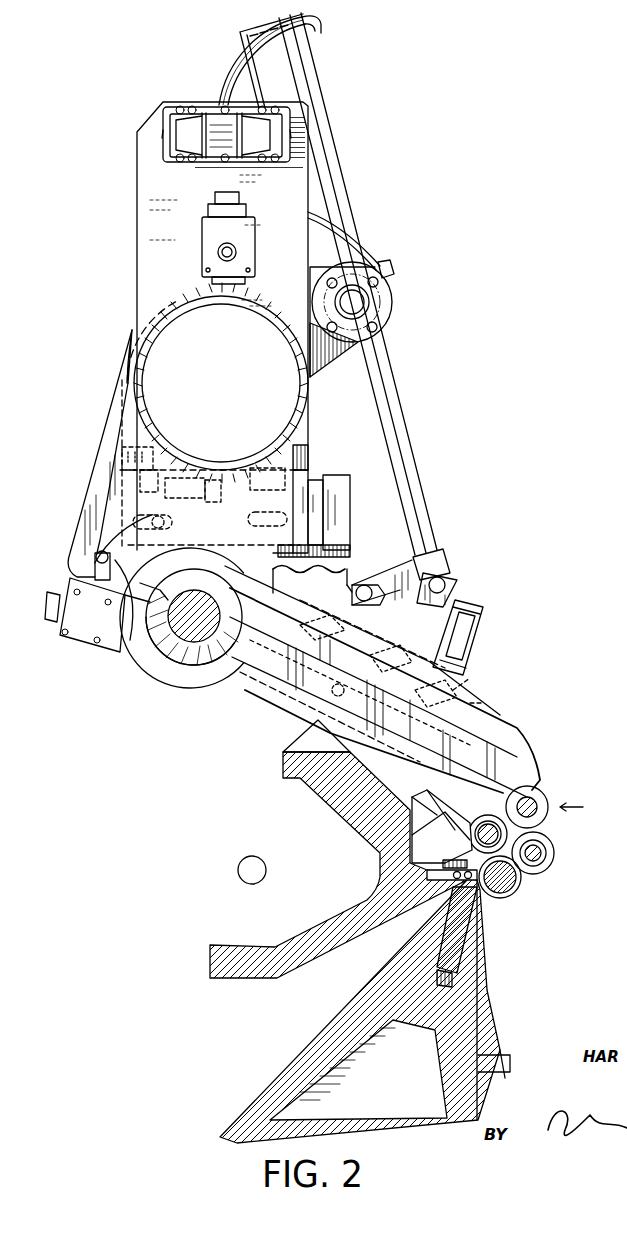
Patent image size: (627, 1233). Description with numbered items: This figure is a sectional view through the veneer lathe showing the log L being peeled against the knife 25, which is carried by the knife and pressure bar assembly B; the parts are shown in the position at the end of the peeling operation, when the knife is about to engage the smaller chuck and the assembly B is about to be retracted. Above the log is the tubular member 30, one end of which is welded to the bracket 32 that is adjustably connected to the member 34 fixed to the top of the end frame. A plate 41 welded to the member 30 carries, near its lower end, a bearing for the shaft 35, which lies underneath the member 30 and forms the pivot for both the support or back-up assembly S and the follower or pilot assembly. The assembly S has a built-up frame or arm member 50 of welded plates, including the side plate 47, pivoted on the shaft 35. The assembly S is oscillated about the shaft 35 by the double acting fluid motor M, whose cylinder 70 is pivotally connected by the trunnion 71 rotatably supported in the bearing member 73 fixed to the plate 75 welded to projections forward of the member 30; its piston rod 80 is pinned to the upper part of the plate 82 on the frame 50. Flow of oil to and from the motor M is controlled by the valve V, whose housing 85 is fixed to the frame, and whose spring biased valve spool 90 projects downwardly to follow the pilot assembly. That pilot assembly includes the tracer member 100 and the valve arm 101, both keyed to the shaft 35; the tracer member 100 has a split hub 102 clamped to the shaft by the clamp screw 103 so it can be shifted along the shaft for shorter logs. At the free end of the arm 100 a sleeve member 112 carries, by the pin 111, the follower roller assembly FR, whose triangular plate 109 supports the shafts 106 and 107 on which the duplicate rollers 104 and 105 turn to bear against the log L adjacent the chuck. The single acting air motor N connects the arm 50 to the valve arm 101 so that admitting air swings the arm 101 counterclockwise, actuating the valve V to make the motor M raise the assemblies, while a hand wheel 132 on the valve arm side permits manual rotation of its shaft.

The motor M is at (345, 162).
The cylinder 70 is at (341, 201).
The plate 75 is at (292, 258).
The bearing member 73 is at (363, 305).
The trunnion 71 is at (392, 323).
The piston rod 80 is at (389, 388).
The bracket 32 is at (127, 355).
The tubular member 30 is at (160, 338).
The plate 41 is at (143, 433).
The member 34 is at (336, 472).
The side plate 47 is at (309, 594).
The motor N is at (347, 585).
The plate 82 is at (407, 583).
The support or back-up assembly S is at (468, 576).
The valve V is at (498, 605).
The valve housing 85 is at (482, 634).
The valve spool 90 is at (470, 680).
The hand wheel 132 is at (483, 702).
The tracer member 100 is at (518, 724).
The valve arm 101 is at (73, 659).
The clamp screw 103 is at (143, 637).
The shaft 35 is at (178, 686).
The split hub 102 is at (185, 650).
The frame or arm member 50 is at (281, 709).
The sleeve member 112 is at (535, 795).
The pin 111 is at (537, 805).
The follower roller assembly FR is at (588, 808).
The triangular-shaped plate 109 is at (554, 848).
The shaft 106 is at (546, 854).
The roller 104 is at (521, 872).
The log L is at (518, 902).
The knife 25 is at (462, 930).
The shaft 107 is at (486, 810).
The roller 105 is at (468, 823).
The knife and pressure bar assembly B is at (207, 925).